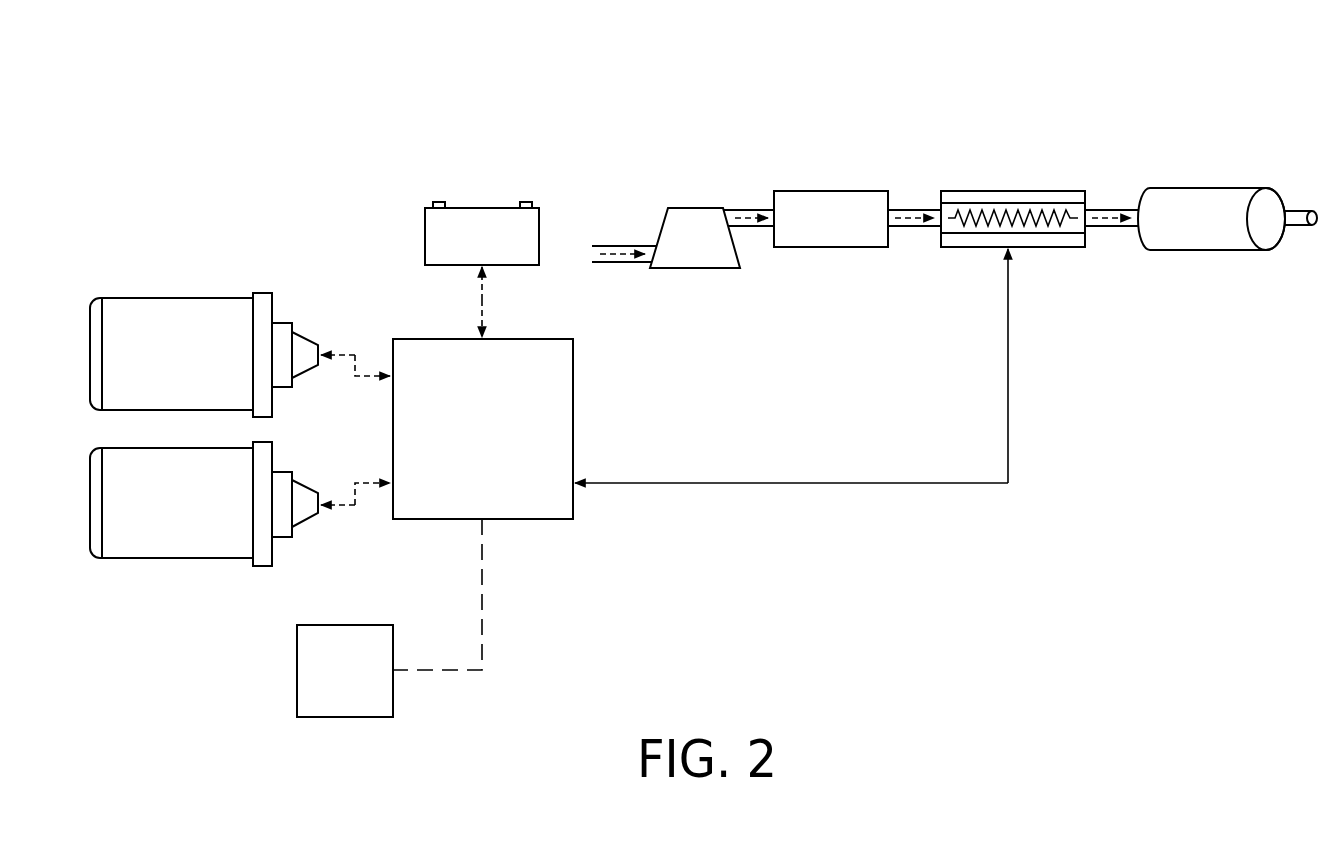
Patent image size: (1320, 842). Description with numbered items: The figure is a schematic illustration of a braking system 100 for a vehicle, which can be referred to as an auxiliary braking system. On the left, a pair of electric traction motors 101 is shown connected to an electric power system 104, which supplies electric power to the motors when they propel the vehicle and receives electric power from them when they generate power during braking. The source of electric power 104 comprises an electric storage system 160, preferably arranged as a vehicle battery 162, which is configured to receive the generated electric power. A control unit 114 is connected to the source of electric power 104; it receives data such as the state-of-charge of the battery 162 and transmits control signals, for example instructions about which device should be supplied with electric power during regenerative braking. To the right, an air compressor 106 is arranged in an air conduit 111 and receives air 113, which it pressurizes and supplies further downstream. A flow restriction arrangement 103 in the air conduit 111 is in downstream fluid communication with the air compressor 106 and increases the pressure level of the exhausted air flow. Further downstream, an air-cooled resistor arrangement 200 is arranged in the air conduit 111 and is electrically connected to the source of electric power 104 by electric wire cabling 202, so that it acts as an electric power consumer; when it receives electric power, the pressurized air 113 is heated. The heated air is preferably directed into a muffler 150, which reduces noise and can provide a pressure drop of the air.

The braking system 100 is at (752, 81).
The electric traction motor 101 is at (176, 298).
The flow restriction arrangement 103 is at (830, 191).
The electric power system 104 is at (533, 519).
The air compressor 106 is at (690, 208).
The air conduit 111 is at (634, 246).
The air 113 is at (616, 250).
The control unit 114 is at (297, 672).
The muffler 150 is at (1207, 188).
The electric storage system 160 is at (465, 208).
The battery 162 is at (506, 238).
The air-cooled resistor arrangement 200 is at (1005, 191).
The electric wire cabling 202 is at (1010, 375).